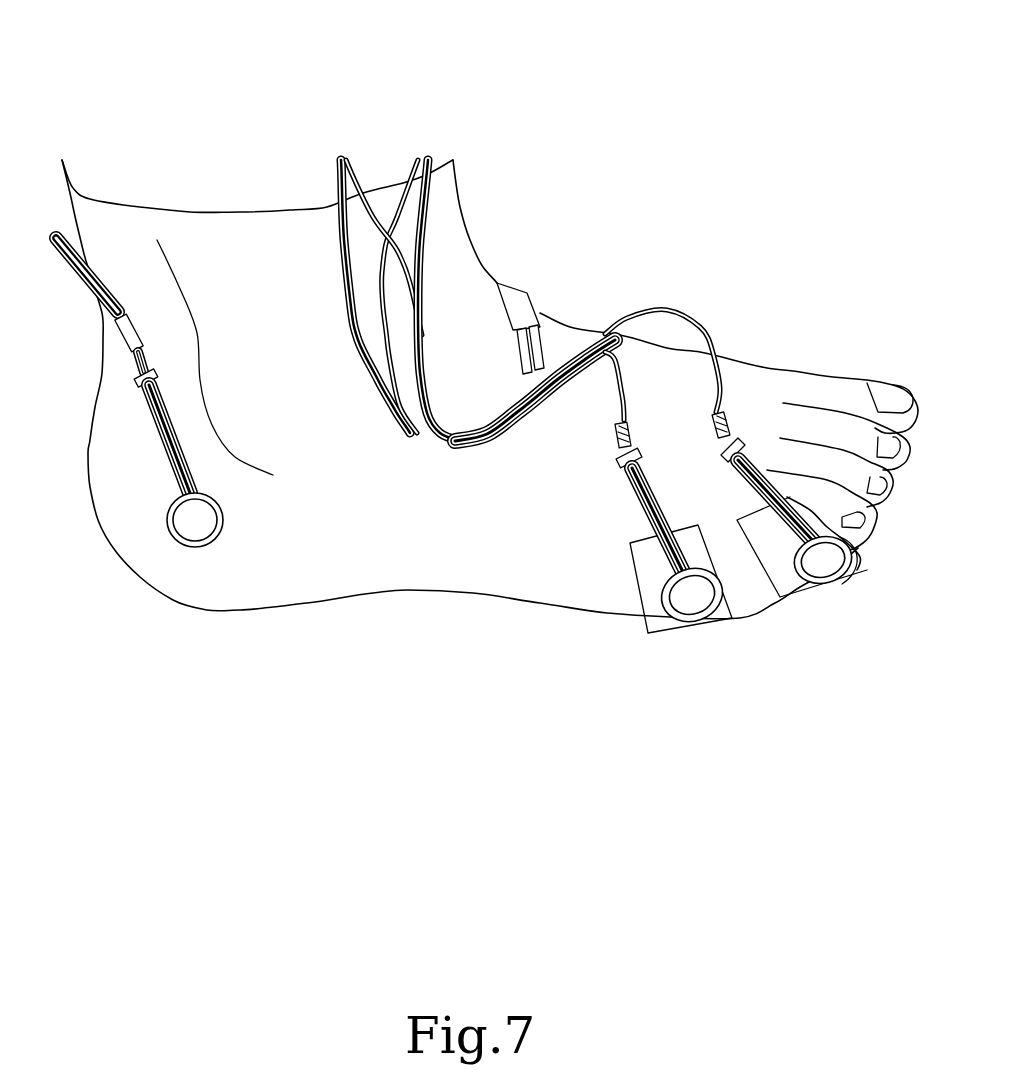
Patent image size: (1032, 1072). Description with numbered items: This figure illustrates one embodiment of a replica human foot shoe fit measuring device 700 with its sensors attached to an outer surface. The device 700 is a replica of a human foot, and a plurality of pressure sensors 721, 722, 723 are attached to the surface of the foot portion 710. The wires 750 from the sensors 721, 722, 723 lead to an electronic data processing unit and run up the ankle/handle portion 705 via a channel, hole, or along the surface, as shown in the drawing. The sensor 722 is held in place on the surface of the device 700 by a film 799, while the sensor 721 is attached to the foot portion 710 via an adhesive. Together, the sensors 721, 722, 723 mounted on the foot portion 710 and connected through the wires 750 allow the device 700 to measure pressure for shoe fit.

The replica human foot shoe fit measuring device 700 is at (557, 177).
The ankle/handle portion 705 is at (197, 333).
The foot portion 710 is at (740, 328).
The pressure sensor 721 is at (192, 520).
The pressure sensor 722 is at (692, 595).
The pressure sensor 723 is at (830, 563).
The wires 750 is at (410, 483).
The film 799 is at (640, 580).